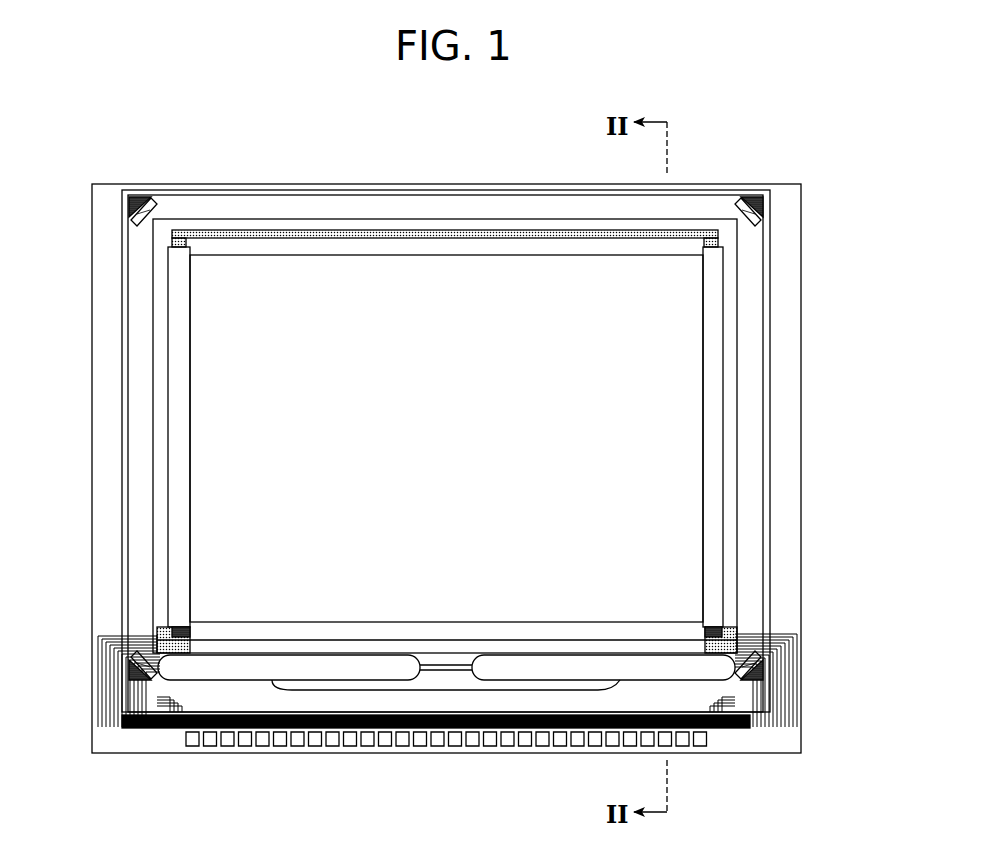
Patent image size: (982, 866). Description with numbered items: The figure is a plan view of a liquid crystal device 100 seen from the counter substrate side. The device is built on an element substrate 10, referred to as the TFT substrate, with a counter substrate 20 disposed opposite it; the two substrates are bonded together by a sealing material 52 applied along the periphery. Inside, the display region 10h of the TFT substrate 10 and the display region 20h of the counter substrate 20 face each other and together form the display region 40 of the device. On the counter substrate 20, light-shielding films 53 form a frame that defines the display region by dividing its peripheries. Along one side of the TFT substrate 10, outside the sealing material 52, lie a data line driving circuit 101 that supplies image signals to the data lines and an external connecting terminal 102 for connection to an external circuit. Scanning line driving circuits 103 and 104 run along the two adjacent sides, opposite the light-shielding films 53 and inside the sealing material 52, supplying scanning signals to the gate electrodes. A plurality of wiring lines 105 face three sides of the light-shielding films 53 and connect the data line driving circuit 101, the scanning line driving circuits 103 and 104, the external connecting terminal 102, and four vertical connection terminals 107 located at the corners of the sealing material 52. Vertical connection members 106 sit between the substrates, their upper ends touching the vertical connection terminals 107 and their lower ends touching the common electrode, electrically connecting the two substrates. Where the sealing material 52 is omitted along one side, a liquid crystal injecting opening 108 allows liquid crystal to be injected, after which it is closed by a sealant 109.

The liquid crystal device 100 is at (768, 132).
The element substrate 10 is at (213, 184).
The counter substrate 20 is at (322, 190).
The wiring lines 105 is at (470, 230).
The sealing material 52 is at (752, 350).
The scanning line driving circuit 103 is at (186, 330).
The scanning line driving circuit 104 is at (708, 330).
The display region 40 is at (474, 442).
The display region of the TFT substrate 10h is at (786, 442).
The display region of the counter substrate 20h is at (664, 427).
The light-shielding films 53 is at (222, 628).
The liquid crystal injecting opening 108 is at (482, 668).
The sealant 109 is at (533, 690).
The data line driving circuit 101 is at (130, 698).
The external connecting terminal 102 is at (372, 746).
The vertical connection members 106 is at (134, 200).
The vertical connection terminals 107 is at (125, 224).